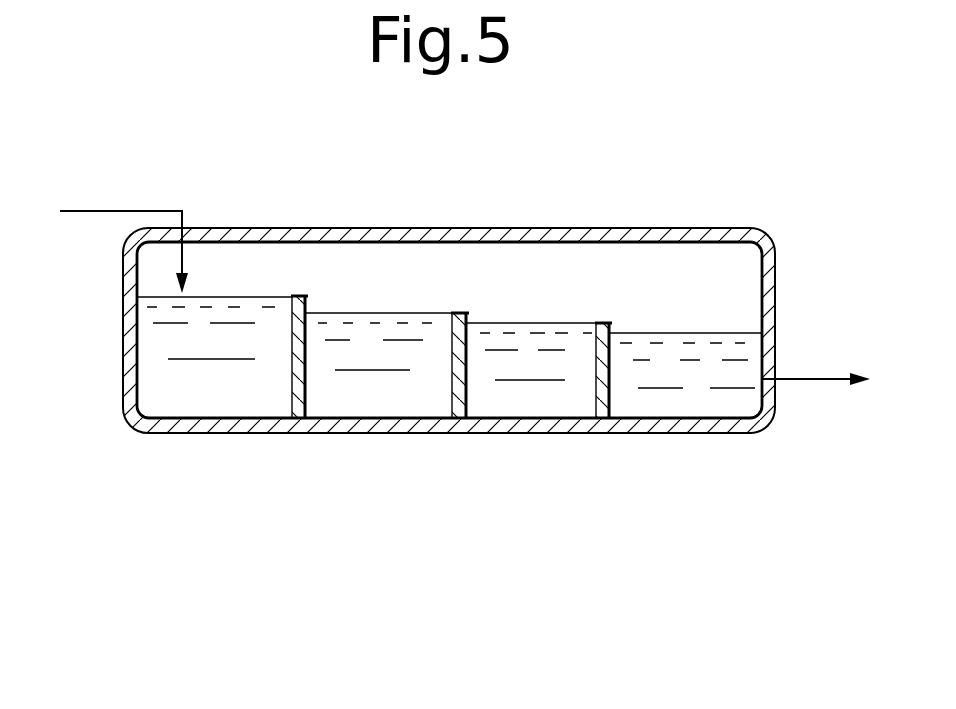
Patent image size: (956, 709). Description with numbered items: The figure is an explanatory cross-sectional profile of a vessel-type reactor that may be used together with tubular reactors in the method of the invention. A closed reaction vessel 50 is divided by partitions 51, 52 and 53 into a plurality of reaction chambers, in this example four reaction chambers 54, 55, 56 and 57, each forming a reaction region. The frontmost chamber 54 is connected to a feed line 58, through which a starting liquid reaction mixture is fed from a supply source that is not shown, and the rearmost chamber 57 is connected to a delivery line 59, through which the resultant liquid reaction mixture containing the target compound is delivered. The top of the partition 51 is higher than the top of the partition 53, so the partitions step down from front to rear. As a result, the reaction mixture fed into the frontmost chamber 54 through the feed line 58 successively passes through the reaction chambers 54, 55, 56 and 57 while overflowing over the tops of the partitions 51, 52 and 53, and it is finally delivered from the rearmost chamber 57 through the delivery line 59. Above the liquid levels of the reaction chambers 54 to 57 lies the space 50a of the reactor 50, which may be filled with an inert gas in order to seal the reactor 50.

The closed reaction vessel 50 is at (471, 220).
The space 50a is at (735, 268).
The partition 51 is at (291, 368).
The partition 52 is at (467, 380).
The partition 53 is at (611, 392).
The frontmost reaction chamber 54 is at (215, 398).
The reaction chamber 55 is at (358, 403).
The reaction chamber 56 is at (552, 407).
The rearmost reaction chamber 57 is at (717, 405).
The feed line 58 is at (140, 210).
The delivery line 59 is at (812, 378).